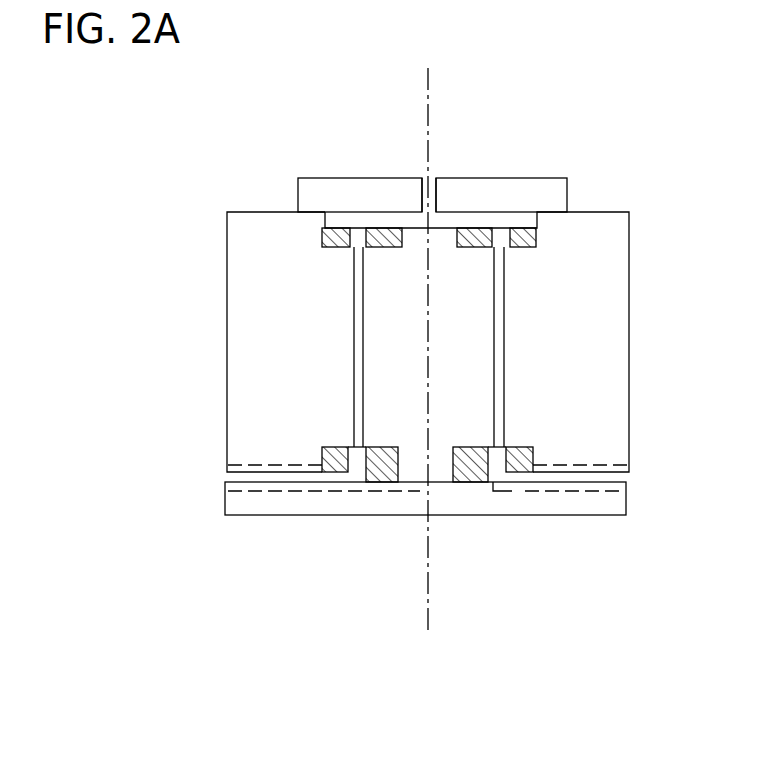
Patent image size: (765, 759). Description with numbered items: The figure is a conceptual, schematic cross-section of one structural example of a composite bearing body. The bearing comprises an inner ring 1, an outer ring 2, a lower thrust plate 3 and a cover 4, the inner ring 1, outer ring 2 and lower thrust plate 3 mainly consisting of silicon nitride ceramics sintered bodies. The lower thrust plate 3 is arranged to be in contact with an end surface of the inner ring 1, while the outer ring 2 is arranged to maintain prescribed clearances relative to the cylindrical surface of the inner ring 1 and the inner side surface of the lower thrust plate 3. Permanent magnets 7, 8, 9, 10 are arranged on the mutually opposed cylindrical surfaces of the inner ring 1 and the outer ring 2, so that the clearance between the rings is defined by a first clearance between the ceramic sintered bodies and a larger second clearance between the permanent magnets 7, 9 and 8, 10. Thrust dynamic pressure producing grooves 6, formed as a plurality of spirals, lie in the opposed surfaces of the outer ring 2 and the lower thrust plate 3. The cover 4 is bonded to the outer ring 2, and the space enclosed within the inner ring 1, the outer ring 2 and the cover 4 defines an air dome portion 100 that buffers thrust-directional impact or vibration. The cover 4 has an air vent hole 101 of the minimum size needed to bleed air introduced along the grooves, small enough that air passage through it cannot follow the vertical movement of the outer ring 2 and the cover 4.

The inner ring 1 is at (415, 247).
The outer ring 2 is at (600, 260).
The lower thrust plate 3 is at (608, 507).
The cover 4 is at (557, 198).
The thrust dynamic pressure producing grooves 6 is at (580, 468).
The permanent magnet 7 is at (482, 226).
The permanent magnet 8 is at (533, 226).
The permanent magnet 9 is at (467, 482).
The permanent magnet 10 is at (512, 483).
The air dome portion 100 is at (383, 222).
The air vent hole 101 is at (427, 177).